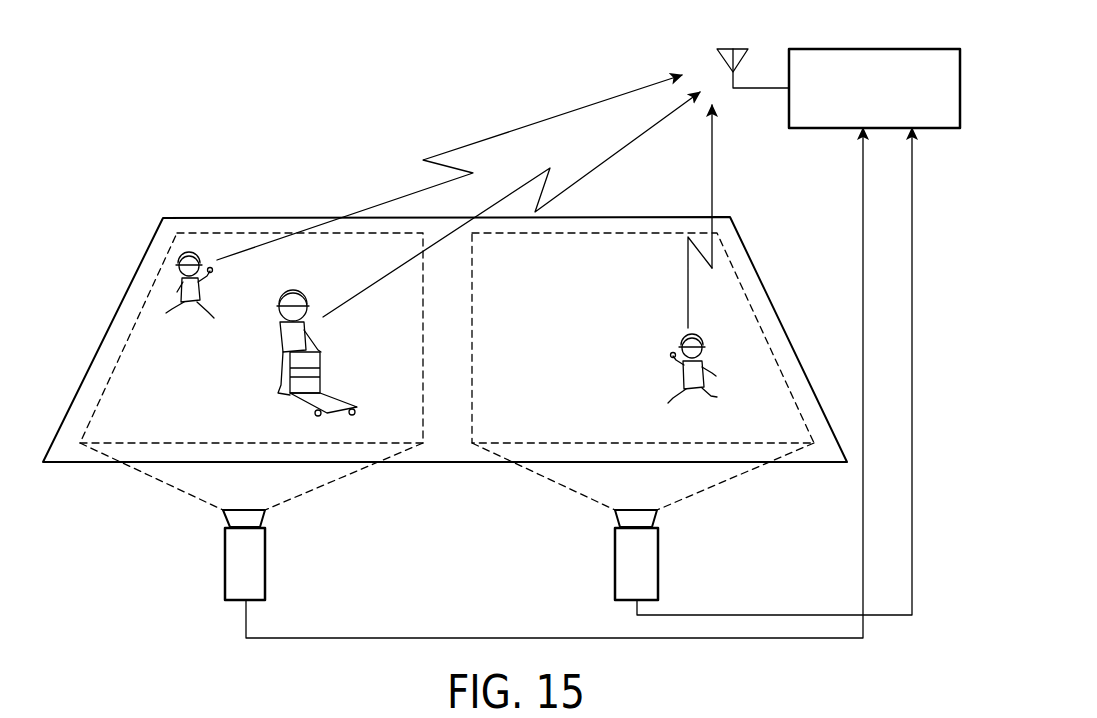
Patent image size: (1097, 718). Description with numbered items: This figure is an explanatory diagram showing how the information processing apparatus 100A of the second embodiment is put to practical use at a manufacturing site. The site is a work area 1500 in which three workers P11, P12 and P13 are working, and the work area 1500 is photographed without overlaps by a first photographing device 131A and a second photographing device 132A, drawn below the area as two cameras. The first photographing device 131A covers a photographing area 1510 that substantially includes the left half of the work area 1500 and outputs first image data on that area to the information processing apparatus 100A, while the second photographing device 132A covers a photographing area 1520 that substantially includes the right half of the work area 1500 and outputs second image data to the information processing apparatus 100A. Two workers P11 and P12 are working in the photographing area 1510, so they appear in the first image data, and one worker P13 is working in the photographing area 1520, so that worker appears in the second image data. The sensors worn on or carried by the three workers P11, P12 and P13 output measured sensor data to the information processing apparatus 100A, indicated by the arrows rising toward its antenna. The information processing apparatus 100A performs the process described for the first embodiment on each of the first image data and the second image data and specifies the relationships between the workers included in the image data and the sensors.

The information processing apparatus 100A is at (937, 49).
The work area 1500 is at (148, 250).
The photographing area 1510 is at (135, 312).
The photographing area 1520 is at (744, 287).
The first photographing device 131A is at (225, 565).
The second photographing device 132A is at (615, 565).
The worker P11 is at (192, 252).
The worker P12 is at (300, 290).
The worker P13 is at (683, 338).